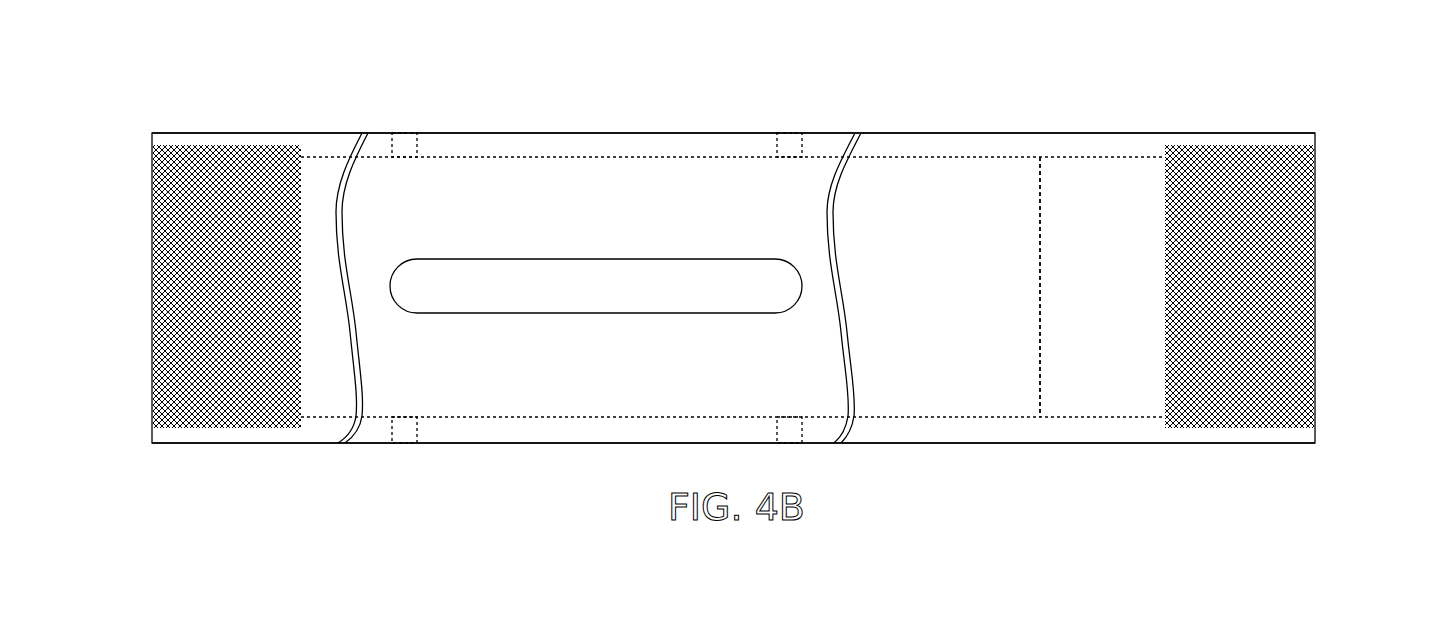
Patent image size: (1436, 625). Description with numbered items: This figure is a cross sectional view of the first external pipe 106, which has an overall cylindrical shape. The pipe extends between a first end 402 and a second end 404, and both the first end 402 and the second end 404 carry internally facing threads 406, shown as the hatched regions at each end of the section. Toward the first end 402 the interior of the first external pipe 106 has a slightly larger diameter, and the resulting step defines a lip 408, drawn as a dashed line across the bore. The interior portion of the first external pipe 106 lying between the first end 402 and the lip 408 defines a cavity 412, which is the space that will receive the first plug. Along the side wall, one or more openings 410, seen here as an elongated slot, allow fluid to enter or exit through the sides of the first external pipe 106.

The first external pipe 106 is at (934, 112).
The first end 402 is at (1243, 458).
The second end 404 is at (182, 461).
The internally facing threads 406 is at (137, 186).
The lip 408 is at (1063, 127).
The openings 410 is at (606, 301).
The cavity 412 is at (1100, 369).